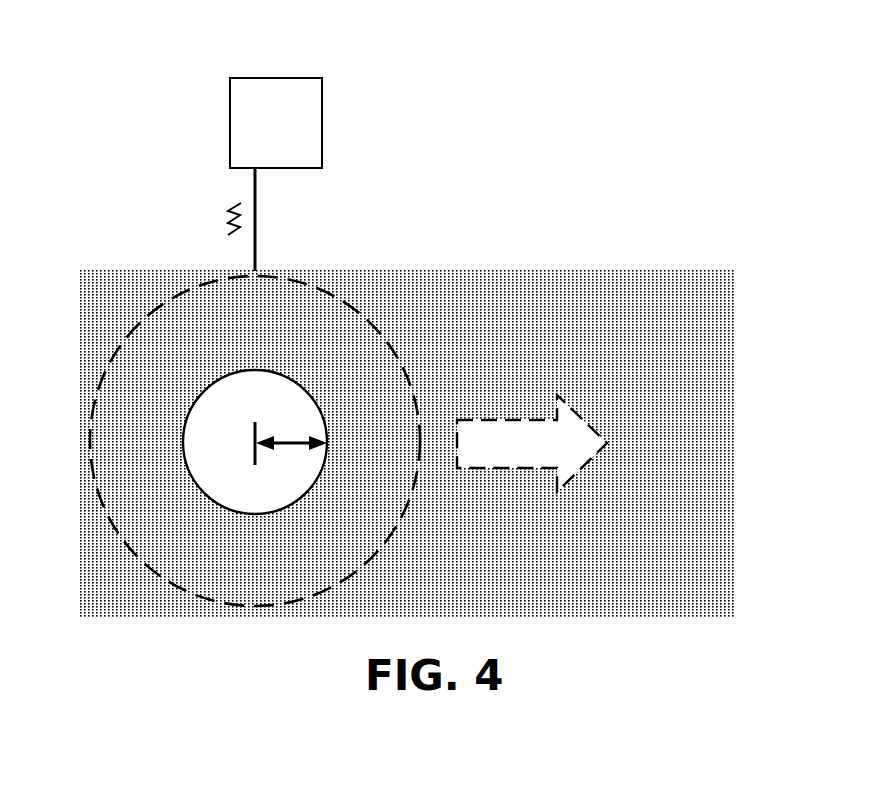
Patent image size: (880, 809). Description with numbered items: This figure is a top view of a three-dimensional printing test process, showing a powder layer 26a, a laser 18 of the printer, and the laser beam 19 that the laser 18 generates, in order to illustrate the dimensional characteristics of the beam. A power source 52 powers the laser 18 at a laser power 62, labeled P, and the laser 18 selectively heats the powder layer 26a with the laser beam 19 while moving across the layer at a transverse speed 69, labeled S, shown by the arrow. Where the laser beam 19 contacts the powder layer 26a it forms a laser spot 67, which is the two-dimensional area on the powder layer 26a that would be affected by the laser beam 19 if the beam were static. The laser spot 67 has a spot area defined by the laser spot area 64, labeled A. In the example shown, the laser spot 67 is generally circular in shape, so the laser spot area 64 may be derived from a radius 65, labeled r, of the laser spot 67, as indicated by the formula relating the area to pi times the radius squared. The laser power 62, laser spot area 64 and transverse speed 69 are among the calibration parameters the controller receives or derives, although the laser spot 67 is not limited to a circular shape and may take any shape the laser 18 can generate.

The power source 52 is at (240, 78).
The laser power 62 is at (225, 217).
The laser beam 19 is at (296, 382).
The powder layer 26a is at (565, 279).
The laser 18 is at (92, 408).
The laser spot area 64 is at (245, 407).
The radius 65 is at (302, 447).
The laser spot 67 is at (240, 493).
The transverse speed 69 is at (537, 432).